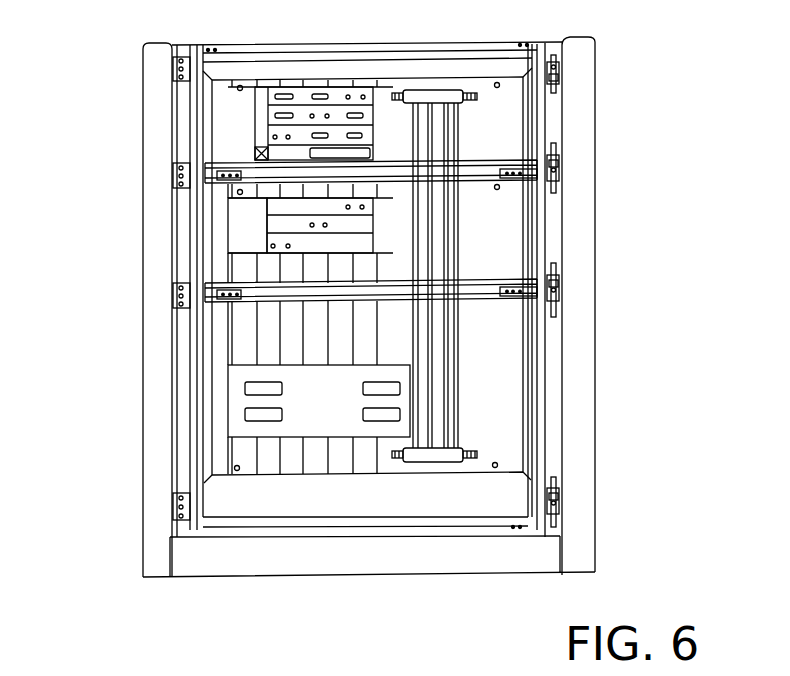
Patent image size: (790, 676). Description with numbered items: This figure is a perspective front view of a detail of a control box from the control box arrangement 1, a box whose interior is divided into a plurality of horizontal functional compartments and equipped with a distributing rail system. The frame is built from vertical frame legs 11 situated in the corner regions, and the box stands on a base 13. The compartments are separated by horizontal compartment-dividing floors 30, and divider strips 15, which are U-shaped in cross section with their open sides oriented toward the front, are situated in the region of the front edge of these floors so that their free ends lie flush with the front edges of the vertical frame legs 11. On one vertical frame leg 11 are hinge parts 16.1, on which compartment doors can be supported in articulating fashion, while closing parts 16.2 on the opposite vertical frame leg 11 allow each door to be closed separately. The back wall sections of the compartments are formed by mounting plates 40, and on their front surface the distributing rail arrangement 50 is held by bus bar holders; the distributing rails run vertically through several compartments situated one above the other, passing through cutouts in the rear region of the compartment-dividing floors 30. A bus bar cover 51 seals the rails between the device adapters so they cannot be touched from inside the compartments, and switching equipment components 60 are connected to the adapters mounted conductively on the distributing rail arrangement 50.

The control box arrangement 1 is at (405, 585).
The vertical frame legs 11 is at (183, 265).
The base 13 is at (221, 556).
The divider strips 15 is at (240, 189).
The hinge parts 16.1 is at (555, 172).
The closing parts 16.2 is at (222, 177).
The compartment-dividing floors 30 is at (313, 503).
The mounting plates 40 is at (242, 131).
The distributing rail arrangement 50 is at (445, 383).
The bus bar cover 51 is at (290, 343).
The switching equipment components 60 is at (238, 407).